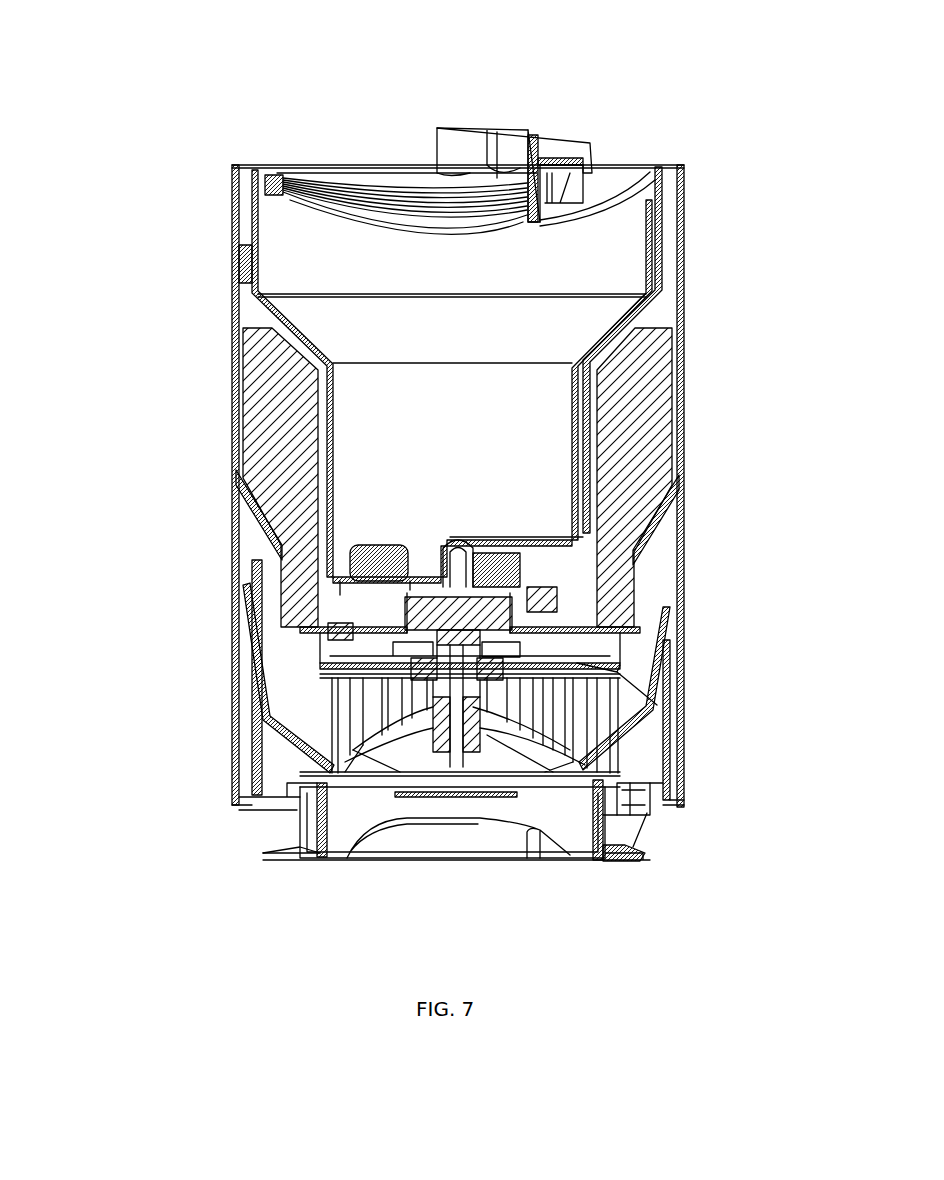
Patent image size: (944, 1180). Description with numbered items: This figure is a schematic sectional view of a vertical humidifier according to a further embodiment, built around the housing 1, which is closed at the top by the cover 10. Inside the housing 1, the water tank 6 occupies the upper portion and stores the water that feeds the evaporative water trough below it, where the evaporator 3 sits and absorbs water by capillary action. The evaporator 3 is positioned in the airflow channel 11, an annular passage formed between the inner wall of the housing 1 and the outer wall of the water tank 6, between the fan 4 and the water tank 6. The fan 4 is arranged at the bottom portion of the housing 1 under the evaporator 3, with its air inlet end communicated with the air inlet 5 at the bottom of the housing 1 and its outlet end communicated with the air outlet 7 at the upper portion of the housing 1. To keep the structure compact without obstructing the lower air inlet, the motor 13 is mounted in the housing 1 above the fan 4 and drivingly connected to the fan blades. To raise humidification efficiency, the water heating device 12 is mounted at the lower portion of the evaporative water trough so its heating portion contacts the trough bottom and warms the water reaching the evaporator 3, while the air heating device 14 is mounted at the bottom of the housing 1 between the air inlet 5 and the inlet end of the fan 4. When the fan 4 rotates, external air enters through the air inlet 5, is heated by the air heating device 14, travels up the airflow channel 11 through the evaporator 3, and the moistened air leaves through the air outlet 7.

The housing 1 is at (240, 204).
The evaporator 3 is at (260, 407).
The fan 4 is at (575, 692).
The air inlet 5 is at (620, 832).
The water tank 6 is at (465, 347).
The air outlet 7 is at (237, 164).
The cover 10 is at (395, 165).
The airflow channel 11 is at (247, 310).
The water heating device 12 is at (588, 655).
The motor 13 is at (492, 540).
The air heating device 14 is at (487, 797).